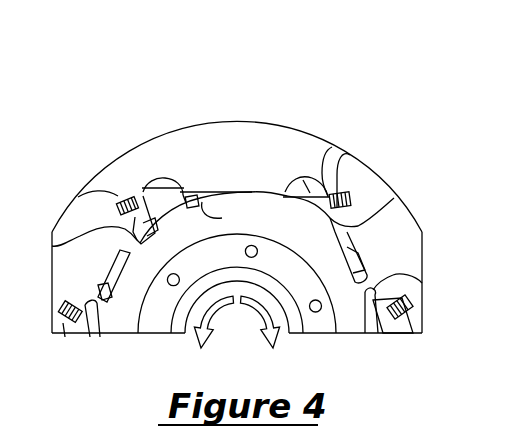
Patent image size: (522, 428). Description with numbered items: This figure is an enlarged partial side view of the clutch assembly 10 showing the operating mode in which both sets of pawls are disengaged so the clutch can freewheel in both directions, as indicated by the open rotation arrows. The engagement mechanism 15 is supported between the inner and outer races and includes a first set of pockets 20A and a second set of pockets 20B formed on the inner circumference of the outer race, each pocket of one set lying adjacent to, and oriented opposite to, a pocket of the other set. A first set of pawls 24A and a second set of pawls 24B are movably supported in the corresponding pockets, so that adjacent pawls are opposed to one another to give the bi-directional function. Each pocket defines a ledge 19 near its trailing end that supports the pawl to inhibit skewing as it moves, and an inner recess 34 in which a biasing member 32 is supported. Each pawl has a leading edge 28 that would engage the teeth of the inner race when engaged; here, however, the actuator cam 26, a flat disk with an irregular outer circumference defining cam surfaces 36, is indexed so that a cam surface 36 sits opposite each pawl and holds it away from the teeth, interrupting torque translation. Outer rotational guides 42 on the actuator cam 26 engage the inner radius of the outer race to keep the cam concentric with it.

The clutch assembly 10 is at (206, 90).
The engagement mechanism 15 is at (200, 168).
The ledge 19 is at (275, 196).
The first set of pockets 20A is at (328, 157).
The second set of pockets 20B is at (140, 200).
The first set of pawls 24A is at (309, 195).
The second set of pawls 24B is at (157, 198).
The actuator cam 26 is at (102, 347).
The leading edge 28 is at (52, 246).
The biasing member 32 is at (78, 197).
The inner recess 34 is at (350, 155).
The cam surface 36 is at (267, 197).
The outer rotational guide 42 is at (422, 283).